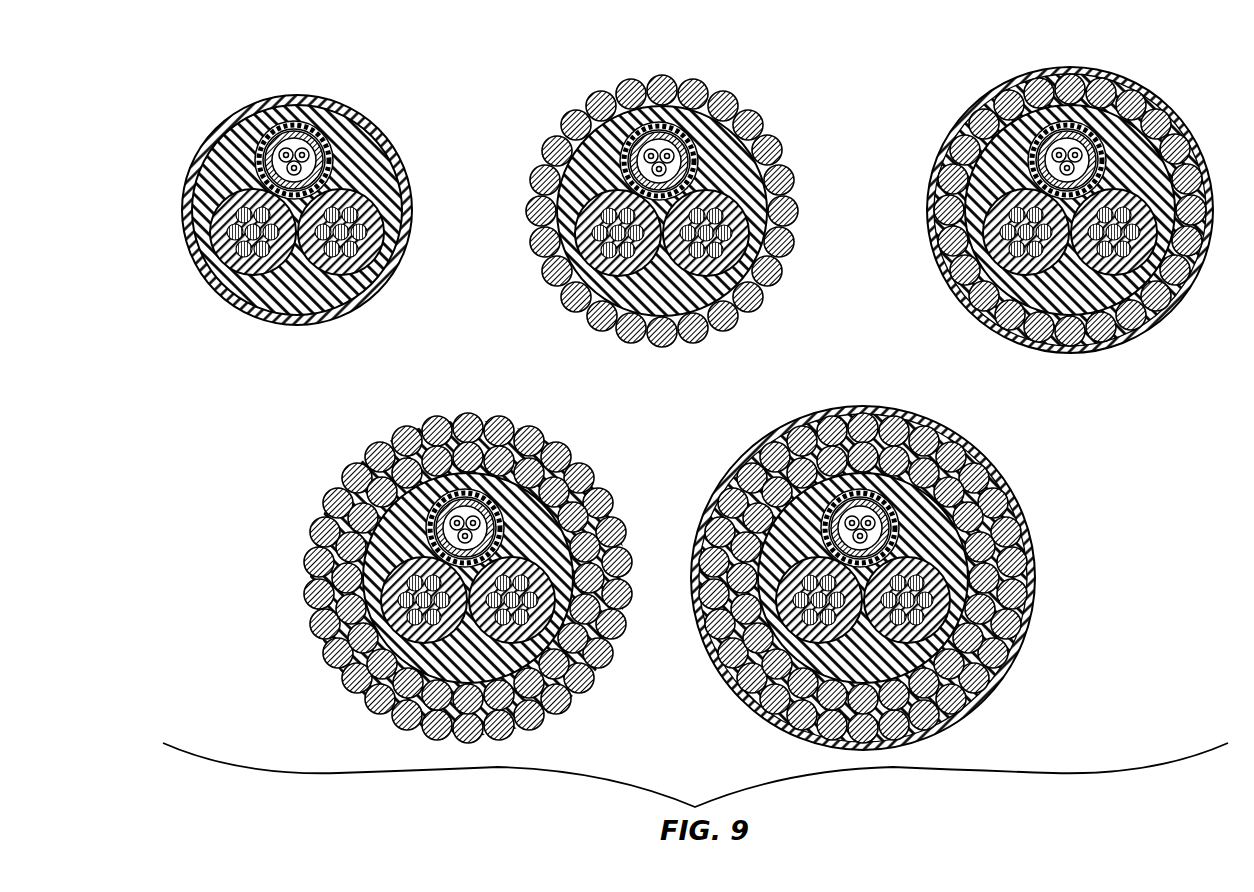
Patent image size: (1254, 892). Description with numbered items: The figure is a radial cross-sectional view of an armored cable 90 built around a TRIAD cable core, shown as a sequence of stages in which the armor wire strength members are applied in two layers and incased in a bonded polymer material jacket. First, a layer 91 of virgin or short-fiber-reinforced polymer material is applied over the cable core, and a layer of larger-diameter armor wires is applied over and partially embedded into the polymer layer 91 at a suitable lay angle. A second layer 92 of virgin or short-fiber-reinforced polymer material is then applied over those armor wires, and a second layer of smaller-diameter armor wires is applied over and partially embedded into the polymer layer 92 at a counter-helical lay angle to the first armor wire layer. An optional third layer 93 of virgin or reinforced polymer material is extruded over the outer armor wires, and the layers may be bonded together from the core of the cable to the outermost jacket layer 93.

The armored cable 90 is at (867, 566).
The layer of polymer material 91 is at (292, 196).
The second layer of polymer material 92 is at (1061, 197).
The third layer of polymer material 93 is at (847, 566).